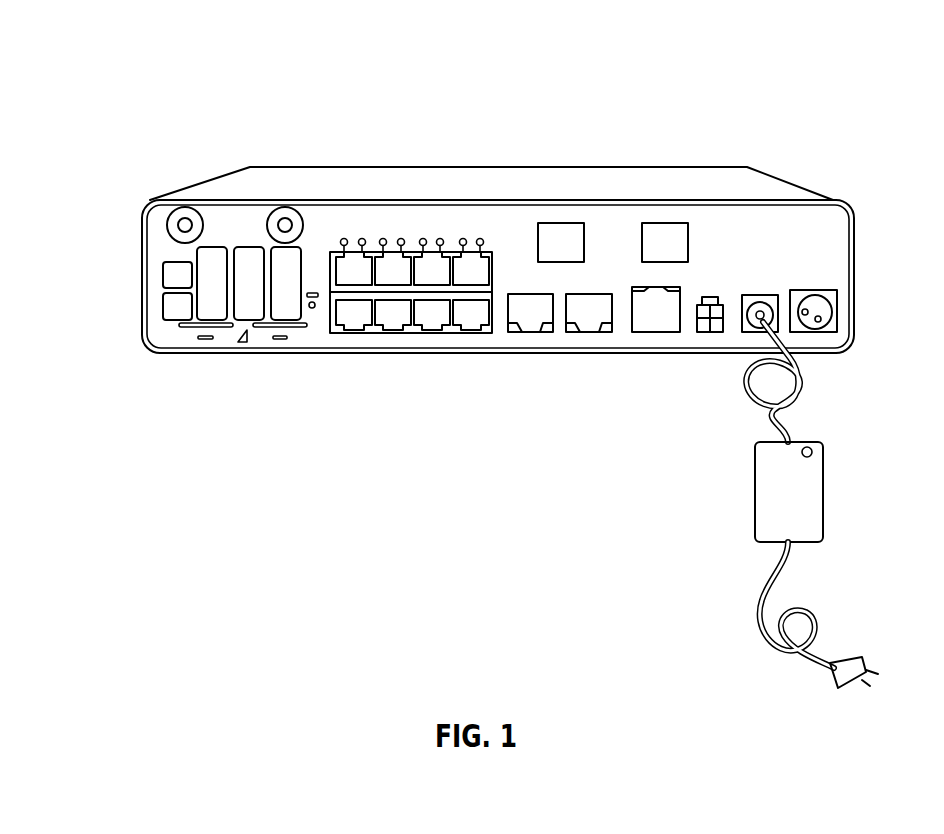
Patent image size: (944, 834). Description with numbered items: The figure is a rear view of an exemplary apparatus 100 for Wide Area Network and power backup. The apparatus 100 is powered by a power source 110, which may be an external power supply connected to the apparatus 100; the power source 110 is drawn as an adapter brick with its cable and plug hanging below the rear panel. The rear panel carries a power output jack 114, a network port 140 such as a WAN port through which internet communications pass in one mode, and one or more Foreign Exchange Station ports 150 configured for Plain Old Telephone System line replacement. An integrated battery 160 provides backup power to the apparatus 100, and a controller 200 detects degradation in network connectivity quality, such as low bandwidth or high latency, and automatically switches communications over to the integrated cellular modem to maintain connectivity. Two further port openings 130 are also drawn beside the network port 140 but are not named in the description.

The apparatus 100 is at (138, 52).
The power source 110 is at (763, 560).
The power output jack 114 is at (705, 330).
The SFP ports 130 is at (529, 320).
The network port 140 is at (648, 320).
The Foreign Exchange Station (FXS) ports 150 is at (418, 264).
The integrated battery 160 is at (562, 223).
The controller 200 is at (665, 223).